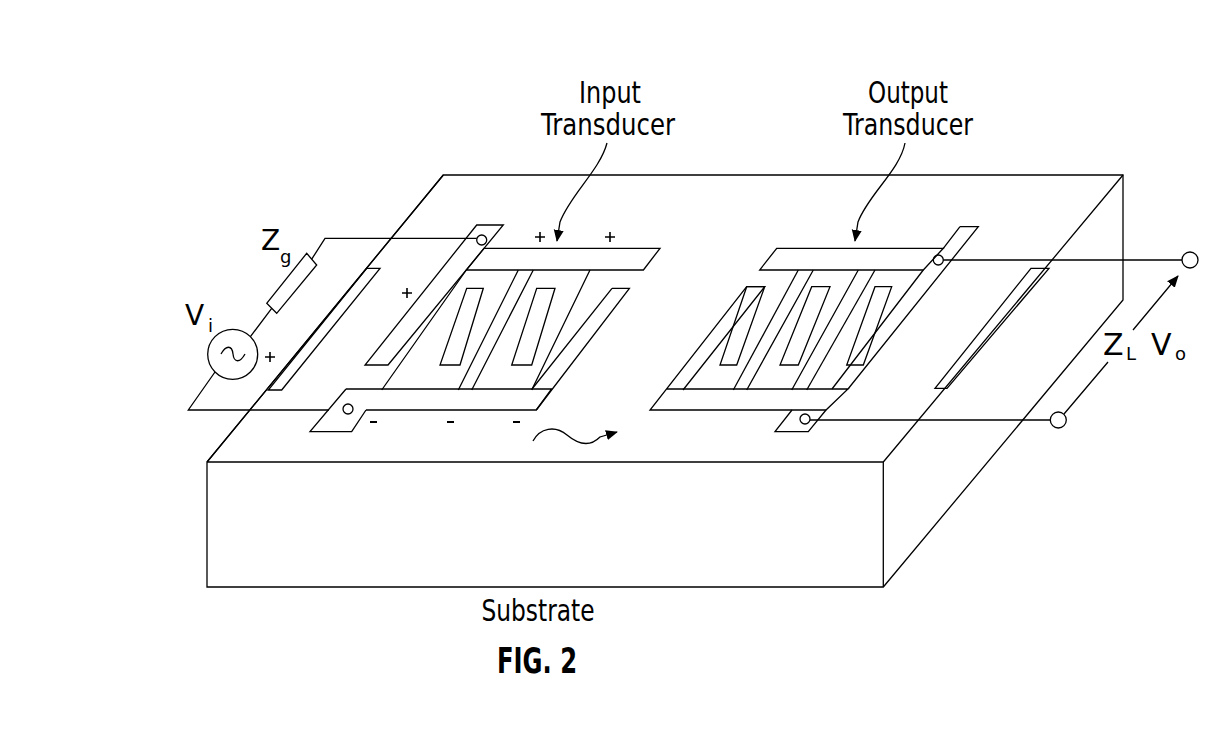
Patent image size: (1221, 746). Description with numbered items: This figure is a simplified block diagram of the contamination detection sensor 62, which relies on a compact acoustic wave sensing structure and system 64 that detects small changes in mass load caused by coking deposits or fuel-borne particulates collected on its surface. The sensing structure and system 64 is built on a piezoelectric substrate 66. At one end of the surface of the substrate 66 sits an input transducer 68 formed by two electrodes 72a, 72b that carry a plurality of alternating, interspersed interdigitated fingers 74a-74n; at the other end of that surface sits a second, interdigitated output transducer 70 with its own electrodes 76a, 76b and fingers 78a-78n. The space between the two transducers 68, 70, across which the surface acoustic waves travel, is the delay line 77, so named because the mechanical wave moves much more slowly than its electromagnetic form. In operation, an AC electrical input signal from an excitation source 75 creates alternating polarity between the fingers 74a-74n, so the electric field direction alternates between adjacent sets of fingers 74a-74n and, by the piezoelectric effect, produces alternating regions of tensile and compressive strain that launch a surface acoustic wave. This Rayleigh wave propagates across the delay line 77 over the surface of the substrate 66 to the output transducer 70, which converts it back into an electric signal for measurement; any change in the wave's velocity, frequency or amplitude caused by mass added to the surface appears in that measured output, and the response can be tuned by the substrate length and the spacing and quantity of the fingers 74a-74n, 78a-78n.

The contamination detection sensor 62 is at (297, 77).
The acoustic wave sensing structure and system 64 is at (753, 71).
The piezoelectric substrate 66 is at (930, 563).
The input transducer 68 is at (511, 143).
The output transducer 70 is at (811, 143).
The electrode 72a is at (522, 216).
The electrode 72b is at (304, 453).
The interdigitated fingers 74a-74n is at (686, 213).
The excitation source 75 is at (207, 357).
The electrode 76a is at (997, 216).
The electrode 76b is at (778, 455).
The delay line 77 is at (658, 353).
The fingers 78a-78n is at (837, 233).